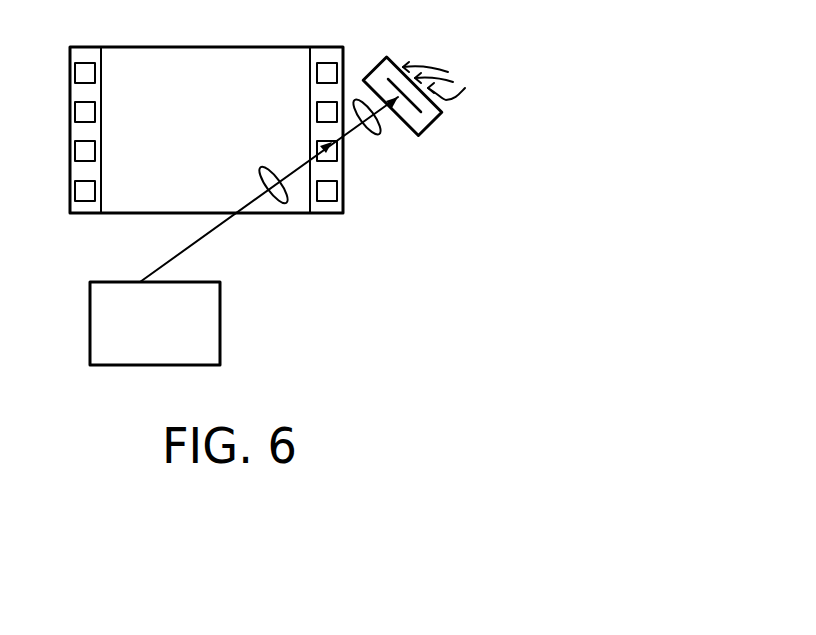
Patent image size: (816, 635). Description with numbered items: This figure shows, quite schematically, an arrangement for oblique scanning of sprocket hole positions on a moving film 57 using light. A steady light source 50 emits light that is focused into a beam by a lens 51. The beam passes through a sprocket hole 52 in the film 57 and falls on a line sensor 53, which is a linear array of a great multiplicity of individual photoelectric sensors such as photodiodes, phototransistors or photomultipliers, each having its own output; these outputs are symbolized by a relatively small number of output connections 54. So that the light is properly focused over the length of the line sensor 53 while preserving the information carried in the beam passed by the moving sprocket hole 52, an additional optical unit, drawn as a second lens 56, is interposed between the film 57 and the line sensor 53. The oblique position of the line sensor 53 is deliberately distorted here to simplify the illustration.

The light source 50 is at (92, 300).
The lens 51 is at (228, 135).
The sprocket hole 52 is at (340, 153).
The line sensor 53 is at (377, 63).
The output connections 54 is at (449, 81).
The lens 56 is at (385, 128).
The film 57 is at (123, 202).